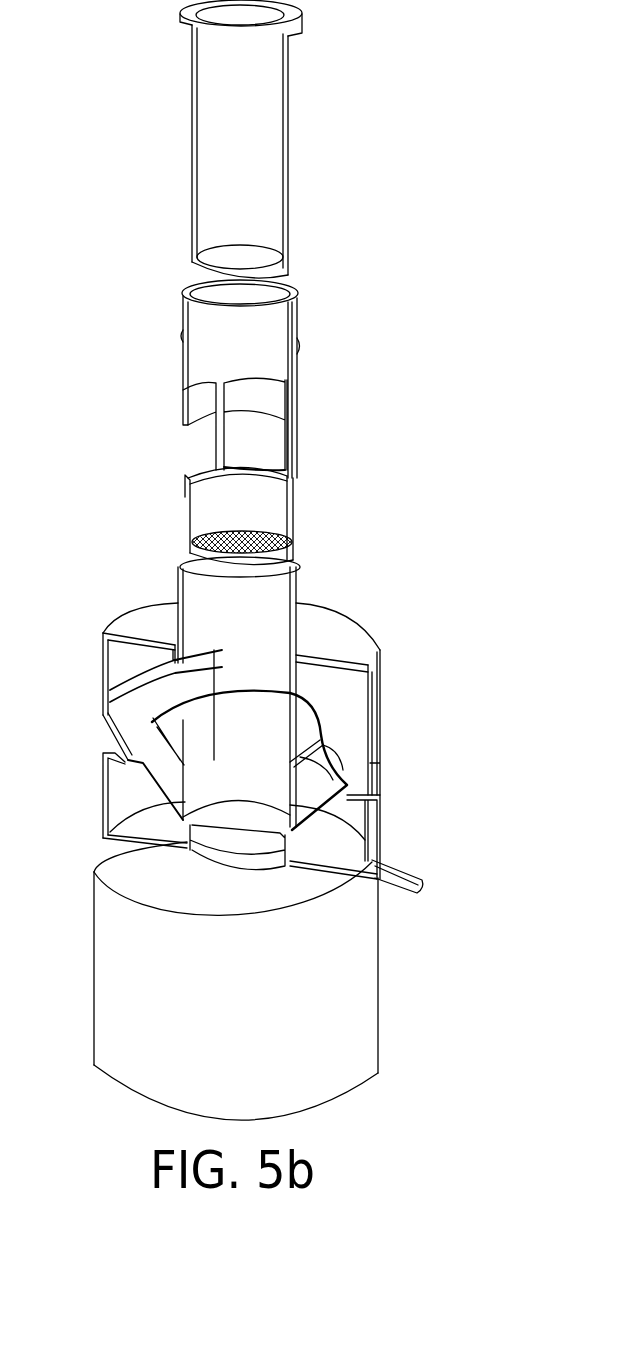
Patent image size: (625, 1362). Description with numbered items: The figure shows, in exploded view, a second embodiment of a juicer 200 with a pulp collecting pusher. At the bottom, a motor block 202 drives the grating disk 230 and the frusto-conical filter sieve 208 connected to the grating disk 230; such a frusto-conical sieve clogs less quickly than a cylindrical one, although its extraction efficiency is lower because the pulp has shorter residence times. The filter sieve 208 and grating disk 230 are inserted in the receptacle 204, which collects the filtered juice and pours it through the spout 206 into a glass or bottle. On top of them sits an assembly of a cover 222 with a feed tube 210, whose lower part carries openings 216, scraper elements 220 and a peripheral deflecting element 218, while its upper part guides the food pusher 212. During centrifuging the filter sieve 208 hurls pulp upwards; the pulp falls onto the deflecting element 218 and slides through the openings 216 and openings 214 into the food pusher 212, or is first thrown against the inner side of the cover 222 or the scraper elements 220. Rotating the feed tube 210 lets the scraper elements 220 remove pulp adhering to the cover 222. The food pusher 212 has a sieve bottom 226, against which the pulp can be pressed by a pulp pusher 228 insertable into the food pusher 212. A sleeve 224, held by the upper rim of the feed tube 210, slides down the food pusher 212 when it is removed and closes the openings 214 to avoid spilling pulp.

The juicer 200 is at (238, 591).
The motor block 202 is at (362, 1012).
The receptacle 204 is at (103, 817).
The spout 206 is at (395, 872).
The frusto-conical filter sieve 208 is at (162, 790).
The feed tube 210 is at (200, 578).
The food pusher 212 is at (300, 300).
The openings 214 is at (238, 422).
The openings 216 is at (170, 693).
The peripheral deflecting element 218 is at (305, 732).
The scraper elements 220 is at (125, 662).
The cover 222 is at (224, 688).
The sleeve 224 is at (300, 387).
The sieve bottom 226 is at (255, 532).
The pulp pusher 228 is at (288, 130).
The grating disk 230 is at (243, 800).